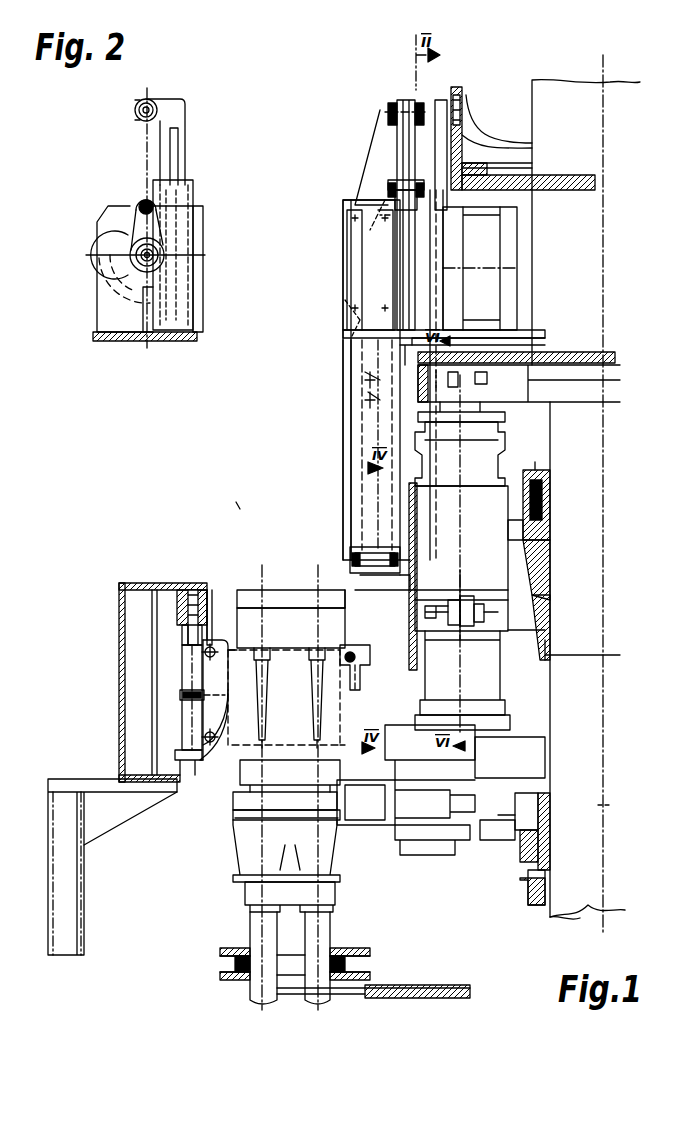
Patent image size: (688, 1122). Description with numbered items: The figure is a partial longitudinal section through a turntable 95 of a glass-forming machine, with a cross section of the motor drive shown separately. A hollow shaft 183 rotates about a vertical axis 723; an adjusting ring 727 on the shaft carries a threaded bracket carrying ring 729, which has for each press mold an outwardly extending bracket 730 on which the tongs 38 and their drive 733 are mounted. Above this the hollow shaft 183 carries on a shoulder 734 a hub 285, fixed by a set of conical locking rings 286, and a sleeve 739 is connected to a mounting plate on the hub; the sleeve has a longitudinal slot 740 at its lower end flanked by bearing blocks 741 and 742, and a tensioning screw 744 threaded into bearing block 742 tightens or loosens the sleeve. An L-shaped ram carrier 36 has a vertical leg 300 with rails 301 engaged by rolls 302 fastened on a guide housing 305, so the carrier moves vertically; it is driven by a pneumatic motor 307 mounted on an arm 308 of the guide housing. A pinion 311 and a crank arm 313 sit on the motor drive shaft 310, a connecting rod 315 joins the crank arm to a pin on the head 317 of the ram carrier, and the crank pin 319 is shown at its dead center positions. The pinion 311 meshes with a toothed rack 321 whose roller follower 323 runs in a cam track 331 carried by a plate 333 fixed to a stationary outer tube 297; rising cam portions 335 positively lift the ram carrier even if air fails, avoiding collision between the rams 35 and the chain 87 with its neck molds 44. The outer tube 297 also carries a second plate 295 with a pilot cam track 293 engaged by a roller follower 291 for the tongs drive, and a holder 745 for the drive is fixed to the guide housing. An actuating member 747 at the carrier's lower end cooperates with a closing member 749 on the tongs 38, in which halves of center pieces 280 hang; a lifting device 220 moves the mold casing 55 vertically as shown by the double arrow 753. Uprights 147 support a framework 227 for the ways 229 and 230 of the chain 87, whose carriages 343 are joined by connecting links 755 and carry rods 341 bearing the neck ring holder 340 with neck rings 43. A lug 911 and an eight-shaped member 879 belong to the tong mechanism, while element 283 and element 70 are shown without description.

In FIG. 2, the roller follower 323 is at (135, 110).
In FIG. 1, the roller follower 323 is at (466, 95).
In FIG. 2, the toothed rack 321 is at (160, 158).
In FIG. 1, the toothed rack 321 is at (440, 98).
In FIG. 2, the crank pin 319 is at (140, 205).
In FIG. 1, the crank pin 319 is at (395, 192).
In FIG. 2, the crank arm 313 is at (138, 225).
In FIG. 1, the crank arm 313 is at (385, 202).
In FIG. 2, the drive shaft 310 is at (130, 252).
In FIG. 2, the pinion 311 is at (112, 267).
In FIG. 2, the pneumatic motor 307 is at (138, 303).
In FIG. 1, the pneumatic motor 307 is at (490, 234).
In FIG. 2, the arm 308 is at (178, 341).
In FIG. 1, the arm 308 is at (548, 342).
In FIG. 1, the head 317 is at (385, 114).
In FIG. 1, the connecting rod 315 is at (406, 152).
In FIG. 1, the rising cam portions 335 is at (470, 147).
In FIG. 1, the cam track 331 is at (510, 165).
In FIG. 1, the plate 333 is at (598, 184).
In FIG. 1, the outer tube 297 is at (555, 272).
In FIG. 1, the vertical leg 300 is at (360, 217).
In FIG. 1, the rails 301 is at (380, 242).
In FIG. 1, the ram carrier 36 is at (340, 268).
In FIG. 1, the rolls 302 is at (335, 362).
In FIG. 1, the pilot cam track 293 is at (365, 382).
In FIG. 1, the guide housing 305 is at (345, 448).
In FIG. 1, the second plate 295 is at (612, 358).
In FIG. 1, the roller follower 291 is at (535, 387).
In FIG. 1, the holder 745 is at (500, 414).
In FIG. 1, the conical locking rings 286 is at (548, 486).
In FIG. 1, the hub 285 is at (548, 534).
In FIG. 1, the sleeve 739 is at (548, 567).
In FIG. 1, the spindle body 283 is at (512, 670).
In FIG. 1, the shoulder 734 is at (580, 652).
In FIG. 1, the drive 733 is at (525, 697).
In FIG. 1, the longitudinal slot 740 is at (460, 612).
In FIG. 1, the bearing block 741 is at (474, 607).
In FIG. 1, the tensioning screw 744 is at (425, 614).
In FIG. 1, the bearing block 742 is at (462, 620).
In FIG. 1, the closing member 749 is at (372, 764).
In FIG. 1, the bracket 730 is at (550, 802).
In FIG. 1, the vertical axis 723 is at (612, 810).
In FIG. 1, the bracket carrying ring 729 is at (542, 844).
In FIG. 1, the adjusting ring 727 is at (545, 894).
In FIG. 1, the hollow shaft 183 is at (582, 917).
In FIG. 1, the framework 227 is at (117, 652).
In FIG. 1, the way 229 is at (180, 610).
In FIG. 1, the chain 87 is at (170, 644).
In FIG. 1, the carriages 343 is at (175, 712).
In FIG. 1, the rods 341 is at (205, 654).
In FIG. 1, the connecting links 755 is at (180, 696).
In FIG. 1, the way 230 is at (175, 758).
In FIG. 1, the neck ring holder 340 is at (228, 737).
In FIG. 1, the head plate 70 is at (290, 590).
In FIG. 1, the rams 35 is at (318, 732).
In FIG. 1, the neck rings 43 is at (318, 772).
In FIG. 1, the turntable 95 is at (236, 502).
In FIG. 1, the actuating member 747 is at (356, 694).
In FIG. 1, the neck molds 44 is at (238, 784).
In FIG. 1, the tongs 38 is at (232, 804).
In FIG. 1, the center pieces 280 is at (232, 814).
In FIG. 1, the mold casing 55 is at (240, 852).
In FIG. 1, the double arrow 753 is at (232, 899).
In FIG. 1, the lifting device 220 is at (243, 992).
In FIG. 1, the uprights 147 is at (84, 906).
In FIG. 1, the lug 911 is at (420, 812).
In FIG. 1, the 8-shaped member 879 is at (440, 854).